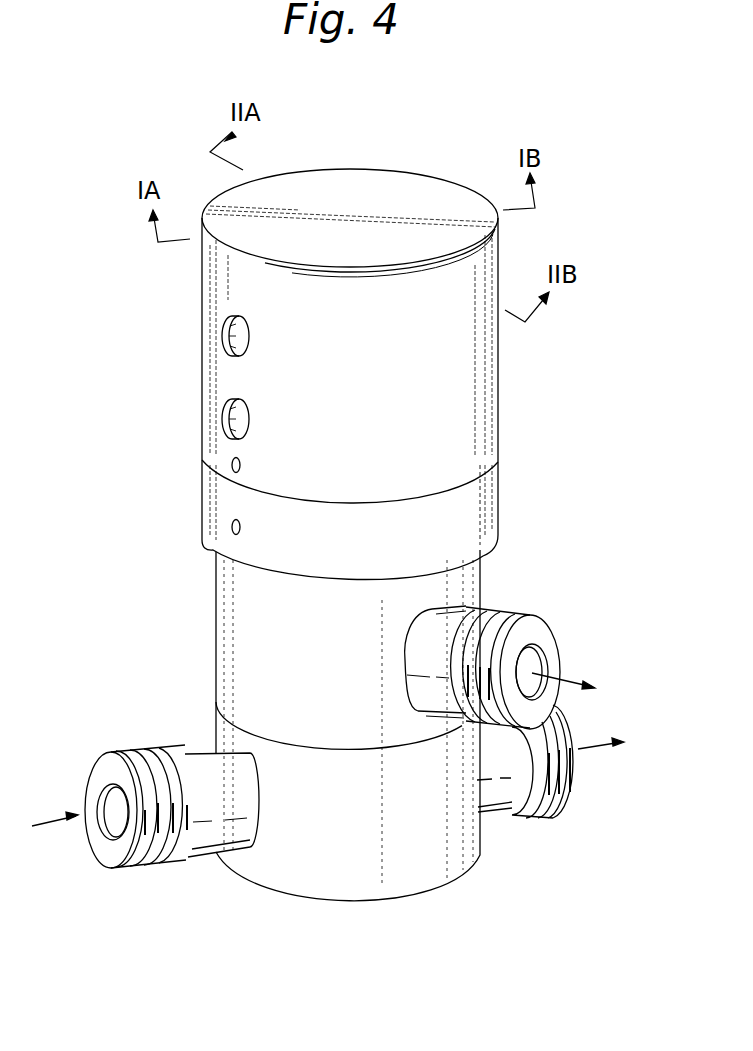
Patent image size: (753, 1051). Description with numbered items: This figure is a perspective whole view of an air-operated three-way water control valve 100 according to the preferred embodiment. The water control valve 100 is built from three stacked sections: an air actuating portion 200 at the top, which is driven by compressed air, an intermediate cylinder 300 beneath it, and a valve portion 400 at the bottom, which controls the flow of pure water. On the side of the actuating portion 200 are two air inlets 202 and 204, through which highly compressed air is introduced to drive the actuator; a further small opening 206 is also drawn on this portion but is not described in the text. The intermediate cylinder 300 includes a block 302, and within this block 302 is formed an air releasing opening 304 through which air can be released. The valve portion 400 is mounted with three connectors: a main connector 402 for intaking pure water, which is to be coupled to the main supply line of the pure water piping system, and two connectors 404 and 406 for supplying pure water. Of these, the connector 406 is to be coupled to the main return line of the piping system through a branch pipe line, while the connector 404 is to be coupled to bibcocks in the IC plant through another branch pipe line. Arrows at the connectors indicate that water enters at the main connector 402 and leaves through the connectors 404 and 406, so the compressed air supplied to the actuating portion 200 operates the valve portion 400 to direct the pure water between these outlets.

The water control valve 100 is at (584, 409).
The air actuating portion 200 is at (358, 384).
The air inlet 202 is at (223, 338).
The air inlet 204 is at (223, 418).
The indicator opening 206 is at (229, 466).
The intermediate cylinder 300 is at (362, 551).
The block 302 is at (485, 500).
The air releasing opening 304 is at (229, 528).
The valve portion 400 is at (362, 678).
The main connector 402 is at (160, 868).
The connector 404 is at (545, 822).
The connector 406 is at (519, 611).